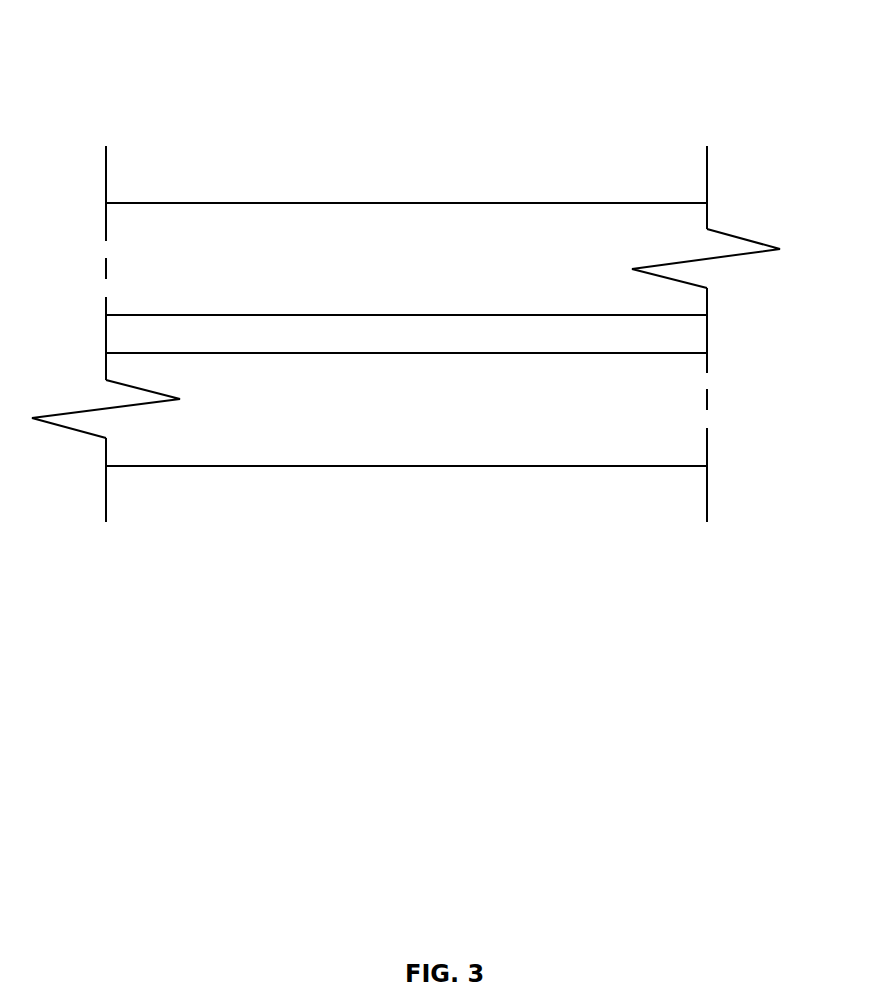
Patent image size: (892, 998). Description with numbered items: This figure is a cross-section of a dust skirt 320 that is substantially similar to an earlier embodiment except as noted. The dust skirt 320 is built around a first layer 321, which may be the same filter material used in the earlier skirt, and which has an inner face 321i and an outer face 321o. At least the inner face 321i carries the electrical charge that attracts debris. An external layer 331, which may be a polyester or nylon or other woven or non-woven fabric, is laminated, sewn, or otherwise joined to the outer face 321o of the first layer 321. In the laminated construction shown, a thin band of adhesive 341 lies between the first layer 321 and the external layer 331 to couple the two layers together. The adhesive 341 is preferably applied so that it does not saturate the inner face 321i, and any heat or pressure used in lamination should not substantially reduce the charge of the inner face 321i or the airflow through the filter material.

The dust skirt 320 is at (477, 90).
The external layer 331 is at (427, 271).
The adhesive 341 is at (668, 335).
The first layer 321 is at (427, 423).
The inner face 321i is at (219, 466).
The outer face 321o is at (518, 353).